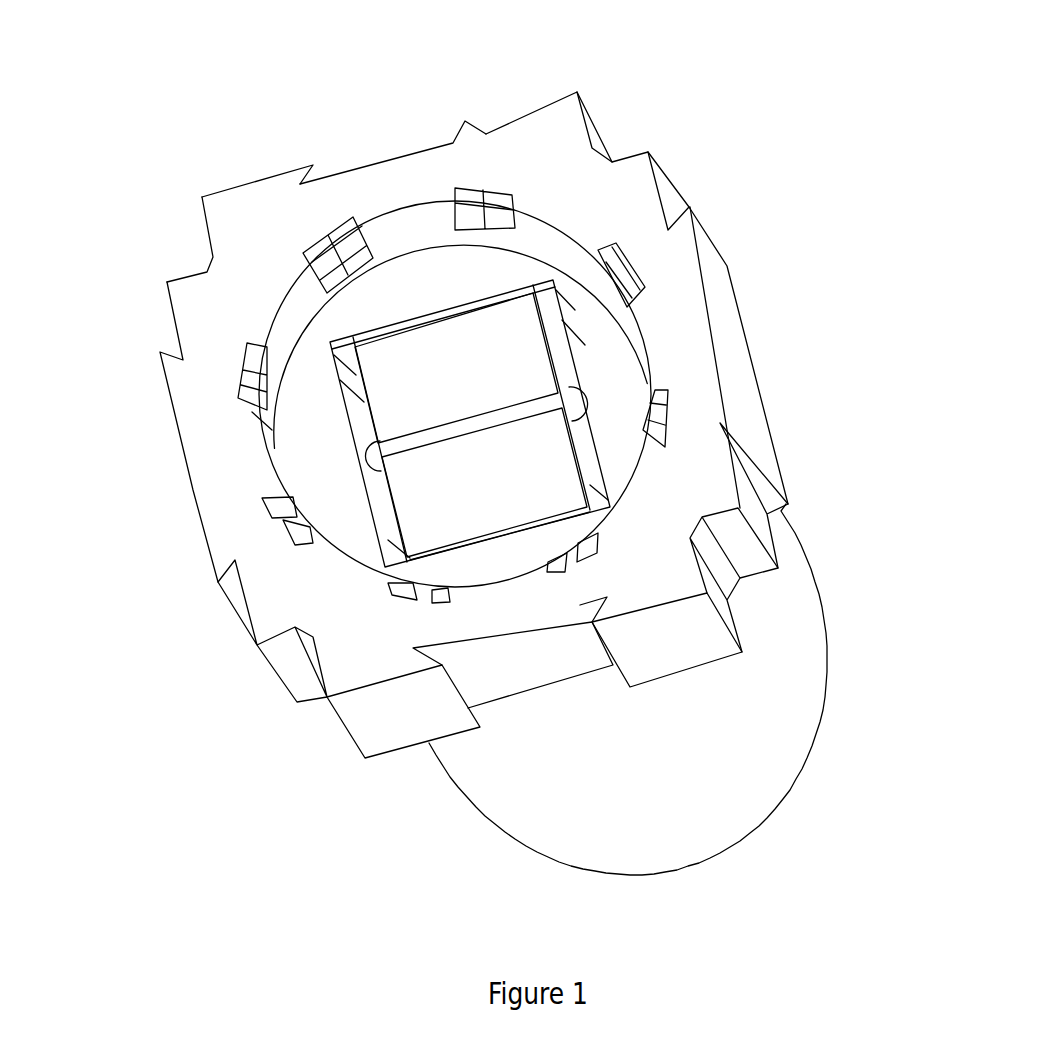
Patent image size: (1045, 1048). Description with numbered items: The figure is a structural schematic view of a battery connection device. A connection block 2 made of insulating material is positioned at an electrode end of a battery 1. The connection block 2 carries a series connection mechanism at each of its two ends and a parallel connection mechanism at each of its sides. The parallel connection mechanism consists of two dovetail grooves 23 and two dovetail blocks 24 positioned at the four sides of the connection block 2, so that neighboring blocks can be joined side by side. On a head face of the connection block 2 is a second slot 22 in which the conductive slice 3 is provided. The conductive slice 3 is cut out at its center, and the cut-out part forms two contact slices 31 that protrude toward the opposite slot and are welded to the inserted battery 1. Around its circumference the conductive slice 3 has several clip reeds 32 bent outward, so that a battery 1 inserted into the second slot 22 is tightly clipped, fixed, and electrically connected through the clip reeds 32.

The battery 1 is at (770, 686).
The connection block 2 is at (668, 330).
The conductive slice 3 is at (610, 347).
The second slot 22 is at (290, 318).
The dovetail groove 23 is at (390, 156).
The dovetail block 24 is at (195, 491).
The contact slice 31 is at (537, 462).
The clip reed 32 is at (512, 197).